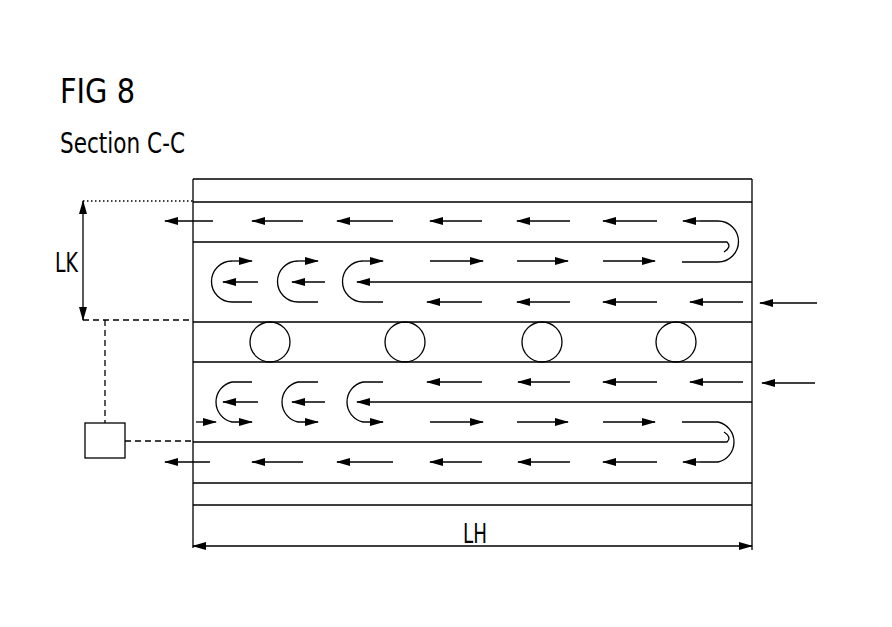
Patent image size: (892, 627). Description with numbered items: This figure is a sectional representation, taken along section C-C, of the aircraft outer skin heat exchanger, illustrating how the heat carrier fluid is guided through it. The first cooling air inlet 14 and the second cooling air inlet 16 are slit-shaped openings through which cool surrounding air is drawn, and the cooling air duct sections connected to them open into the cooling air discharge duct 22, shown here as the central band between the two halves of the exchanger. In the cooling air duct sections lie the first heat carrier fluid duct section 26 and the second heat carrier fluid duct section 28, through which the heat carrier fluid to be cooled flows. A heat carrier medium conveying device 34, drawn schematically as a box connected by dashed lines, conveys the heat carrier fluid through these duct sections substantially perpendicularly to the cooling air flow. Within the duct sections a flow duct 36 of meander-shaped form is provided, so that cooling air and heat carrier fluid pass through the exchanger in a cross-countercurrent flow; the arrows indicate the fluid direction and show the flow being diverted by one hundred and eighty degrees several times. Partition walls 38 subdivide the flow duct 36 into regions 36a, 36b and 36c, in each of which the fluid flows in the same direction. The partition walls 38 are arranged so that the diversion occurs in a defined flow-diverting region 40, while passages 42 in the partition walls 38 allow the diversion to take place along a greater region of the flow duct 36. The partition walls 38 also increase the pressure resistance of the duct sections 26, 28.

The first cooling air inlet 14 is at (562, 189).
The second cooling air inlet 16 is at (345, 495).
The cooling air discharge duct 22 is at (736, 337).
The first heat carrier fluid duct section 26 is at (193, 296).
The second heat carrier fluid duct section 28 is at (753, 427).
The heat carrier medium conveying device 34 is at (105, 459).
The flow duct 36 is at (590, 229).
The region of the flow duct 36a is at (742, 295).
The region of the flow duct 36b is at (196, 262).
The region of the flow duct 36c is at (682, 213).
The partition walls 38 is at (410, 282).
The flow-diverting region 40 is at (727, 246).
The passages 42 is at (333, 404).